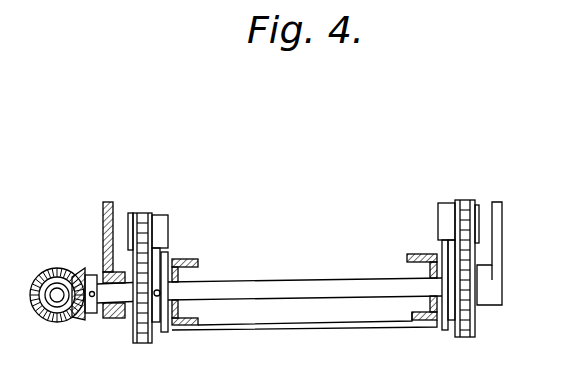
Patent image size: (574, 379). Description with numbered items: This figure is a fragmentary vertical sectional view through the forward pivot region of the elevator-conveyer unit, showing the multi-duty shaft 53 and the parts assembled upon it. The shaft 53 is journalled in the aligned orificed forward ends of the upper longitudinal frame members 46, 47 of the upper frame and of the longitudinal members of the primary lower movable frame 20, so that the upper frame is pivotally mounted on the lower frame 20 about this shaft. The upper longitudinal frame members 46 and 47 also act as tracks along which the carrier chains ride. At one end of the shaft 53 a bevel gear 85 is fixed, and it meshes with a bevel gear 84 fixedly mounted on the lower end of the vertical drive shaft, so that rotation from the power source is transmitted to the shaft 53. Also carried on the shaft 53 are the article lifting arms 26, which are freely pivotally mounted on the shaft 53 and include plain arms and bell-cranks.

The primary lower movable frame 20 is at (190, 258).
The article lifting arms 26 is at (103, 236).
The longitudinal frame member 46 is at (443, 207).
The longitudinal frame member 47 is at (165, 217).
The multi-duty shaft 53 is at (358, 288).
The bevel gear 84 is at (40, 316).
The bevel gear 85 is at (83, 319).